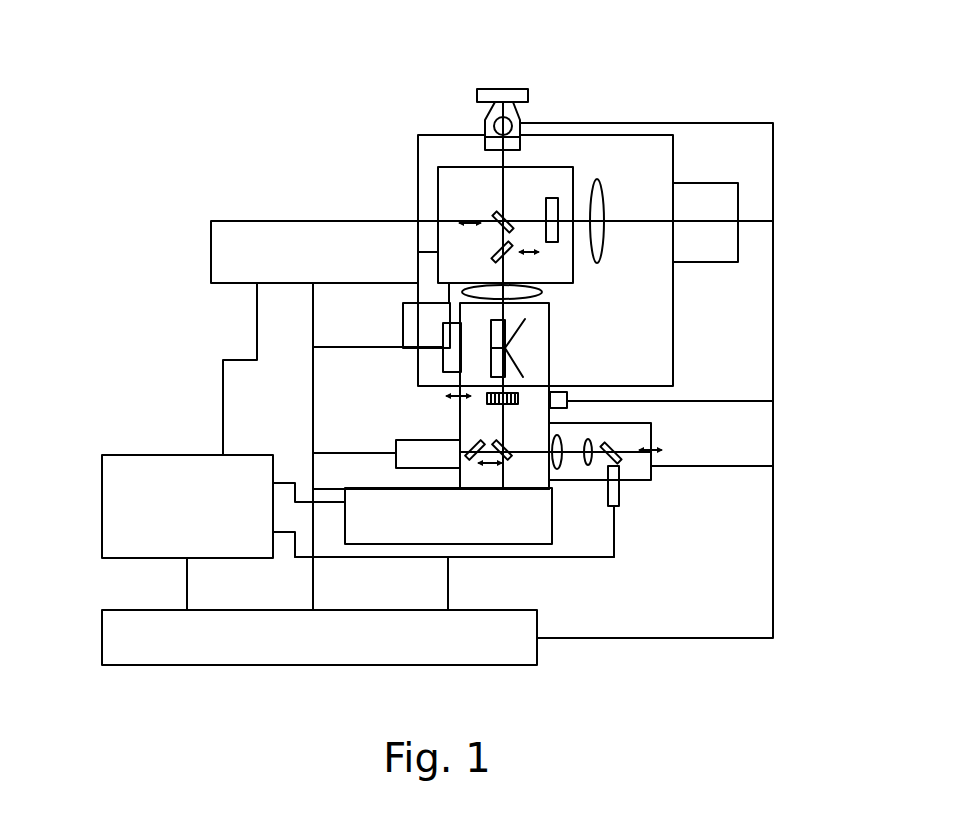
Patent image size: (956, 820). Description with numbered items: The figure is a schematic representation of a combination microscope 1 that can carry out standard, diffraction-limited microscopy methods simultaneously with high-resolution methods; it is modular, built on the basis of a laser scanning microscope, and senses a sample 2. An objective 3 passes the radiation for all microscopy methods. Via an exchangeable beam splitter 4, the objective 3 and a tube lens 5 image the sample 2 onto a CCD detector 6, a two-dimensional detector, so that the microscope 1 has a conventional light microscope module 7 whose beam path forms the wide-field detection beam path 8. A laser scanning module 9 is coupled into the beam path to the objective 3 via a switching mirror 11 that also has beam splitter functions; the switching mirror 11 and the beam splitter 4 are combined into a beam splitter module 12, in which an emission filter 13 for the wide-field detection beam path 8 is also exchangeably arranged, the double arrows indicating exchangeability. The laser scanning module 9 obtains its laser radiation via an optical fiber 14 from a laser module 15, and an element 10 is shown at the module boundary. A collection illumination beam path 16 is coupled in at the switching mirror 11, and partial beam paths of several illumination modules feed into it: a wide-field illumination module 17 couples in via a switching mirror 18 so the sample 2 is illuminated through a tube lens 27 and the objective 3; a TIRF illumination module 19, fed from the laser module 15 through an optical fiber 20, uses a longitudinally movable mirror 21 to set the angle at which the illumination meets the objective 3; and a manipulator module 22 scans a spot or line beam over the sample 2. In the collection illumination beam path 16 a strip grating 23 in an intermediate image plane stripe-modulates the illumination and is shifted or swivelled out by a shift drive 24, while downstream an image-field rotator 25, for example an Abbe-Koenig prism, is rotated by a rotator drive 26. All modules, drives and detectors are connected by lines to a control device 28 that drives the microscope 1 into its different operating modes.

The microscope 1 is at (308, 84).
The sample 2 is at (490, 88).
The objective 3 is at (497, 107).
The beam splitter 4 is at (492, 215).
The tube lens 5 is at (600, 196).
The CCD detector 6 is at (690, 183).
The light microscope module 7 is at (418, 167).
The wide-field detection beam path 8 is at (660, 221).
The laser scanning module 9 is at (238, 221).
The aperture element 10 is at (422, 247).
The switching mirror 11 is at (497, 258).
The beam splitter module 12 is at (573, 262).
The emission filter 13 is at (548, 197).
The optical fiber 14 is at (223, 375).
The laser module 15 is at (147, 455).
The collection illumination beam path 16 is at (502, 262).
The wide-field illumination module 17 is at (396, 441).
The switching mirror 18 is at (480, 445).
The TIRF illumination module 19 is at (635, 481).
The optical fiber 20 is at (570, 557).
The mirror 21 is at (620, 452).
The manipulator module 22 is at (400, 545).
The strip grating 23 is at (505, 404).
The shift drive 24 is at (567, 400).
The image-field rotator 25 is at (521, 340).
The rotator drive 26 is at (443, 360).
The tube lens 27 is at (457, 290).
The control device 28 is at (537, 665).